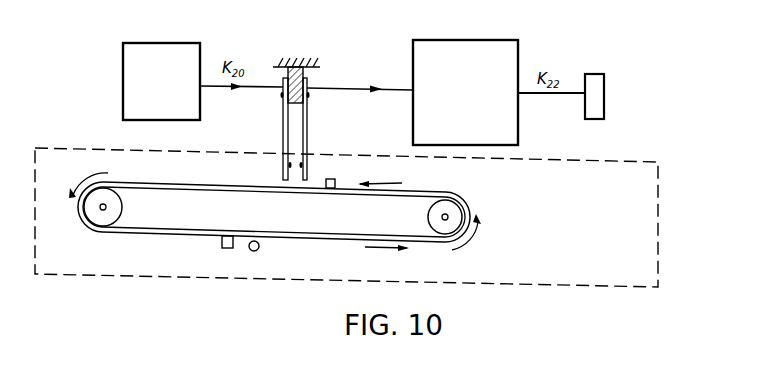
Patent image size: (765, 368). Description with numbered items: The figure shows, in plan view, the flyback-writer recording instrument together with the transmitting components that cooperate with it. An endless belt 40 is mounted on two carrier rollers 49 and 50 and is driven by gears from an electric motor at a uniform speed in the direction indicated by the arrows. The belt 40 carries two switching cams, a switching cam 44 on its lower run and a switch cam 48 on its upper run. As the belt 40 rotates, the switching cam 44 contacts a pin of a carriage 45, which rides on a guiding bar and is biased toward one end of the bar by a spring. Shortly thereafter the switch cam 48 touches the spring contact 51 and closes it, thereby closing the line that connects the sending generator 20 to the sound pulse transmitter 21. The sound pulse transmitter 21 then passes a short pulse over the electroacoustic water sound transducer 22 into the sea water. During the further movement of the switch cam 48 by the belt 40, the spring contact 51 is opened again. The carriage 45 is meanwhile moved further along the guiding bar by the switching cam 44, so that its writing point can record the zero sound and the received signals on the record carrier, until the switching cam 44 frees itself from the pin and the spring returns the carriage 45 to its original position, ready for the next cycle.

The sending generator 20 is at (158, 52).
The sound pulse transmitter 21 is at (460, 47).
The electroacoustic transducer 22 is at (605, 84).
The endless belt 40 is at (339, 239).
The switching cam 44 is at (222, 247).
The carriage 45 is at (259, 248).
The switch cam 48 is at (336, 176).
The carrier roller 49 is at (428, 216).
The carrier roller 50 is at (122, 207).
The spring contact 51 is at (307, 125).